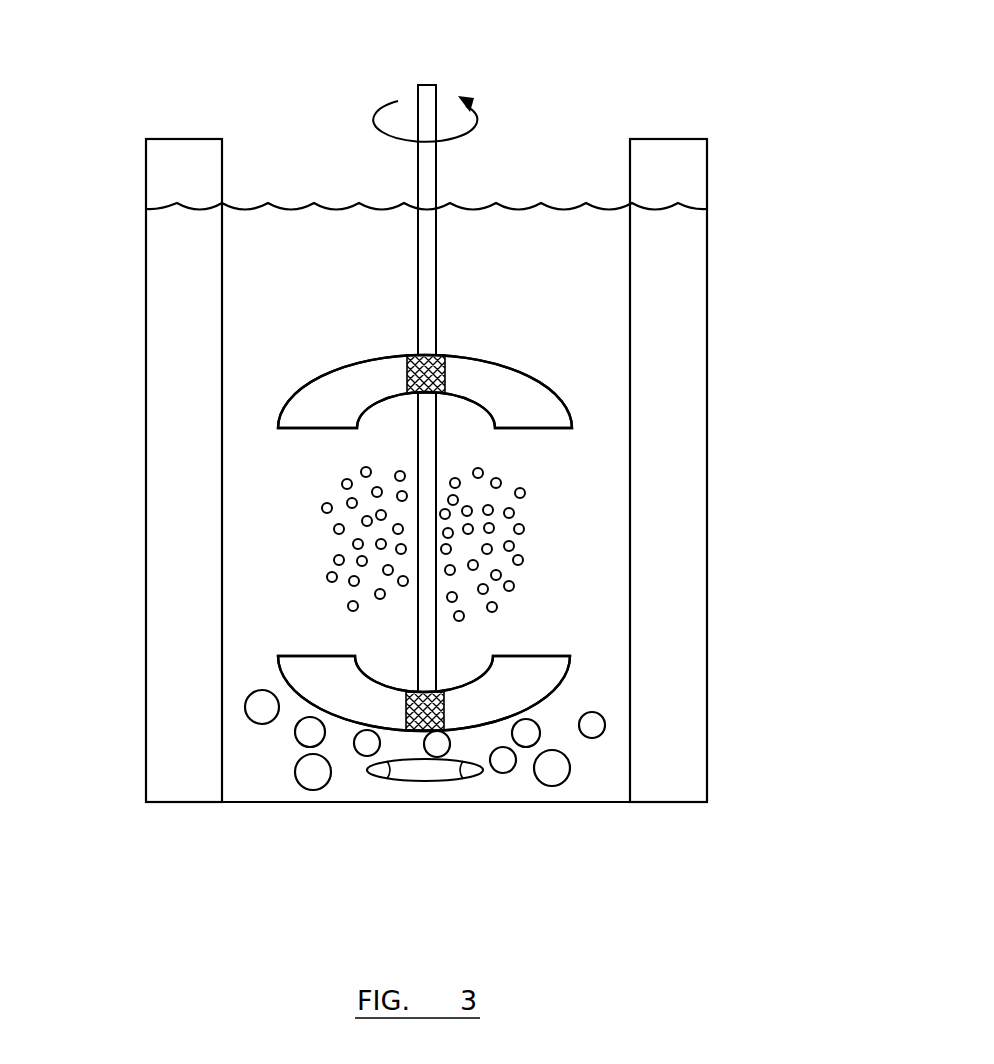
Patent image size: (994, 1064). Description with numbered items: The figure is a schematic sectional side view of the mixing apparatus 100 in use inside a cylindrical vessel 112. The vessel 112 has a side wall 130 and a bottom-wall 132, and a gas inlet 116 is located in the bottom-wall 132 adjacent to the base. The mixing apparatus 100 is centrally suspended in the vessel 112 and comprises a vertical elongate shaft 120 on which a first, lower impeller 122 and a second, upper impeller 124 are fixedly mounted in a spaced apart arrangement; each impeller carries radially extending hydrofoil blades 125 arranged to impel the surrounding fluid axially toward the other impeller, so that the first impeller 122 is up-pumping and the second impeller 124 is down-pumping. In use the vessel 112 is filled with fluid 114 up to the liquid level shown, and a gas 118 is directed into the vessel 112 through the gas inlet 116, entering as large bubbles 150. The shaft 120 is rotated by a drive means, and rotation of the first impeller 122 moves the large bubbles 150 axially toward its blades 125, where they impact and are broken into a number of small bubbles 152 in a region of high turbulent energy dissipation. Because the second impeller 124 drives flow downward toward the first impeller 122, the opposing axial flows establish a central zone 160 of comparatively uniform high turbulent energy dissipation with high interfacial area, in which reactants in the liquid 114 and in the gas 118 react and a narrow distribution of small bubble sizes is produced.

The mixing apparatus 100 is at (552, 136).
The vessel 112 is at (722, 362).
The fluid 114 is at (284, 290).
The gas inlet 116 is at (422, 777).
The gas 118 is at (606, 724).
The vertical elongate shaft 120 is at (420, 172).
The first impeller 122 is at (531, 667).
The second impeller 124 is at (514, 389).
The hydrofoil blades 125 is at (327, 397).
The vessel side wall 130 is at (142, 619).
The bottom-wall 132 is at (593, 803).
The large bubbles 150 is at (300, 740).
The small bubbles 152 is at (327, 576).
The central zone 160 is at (547, 521).